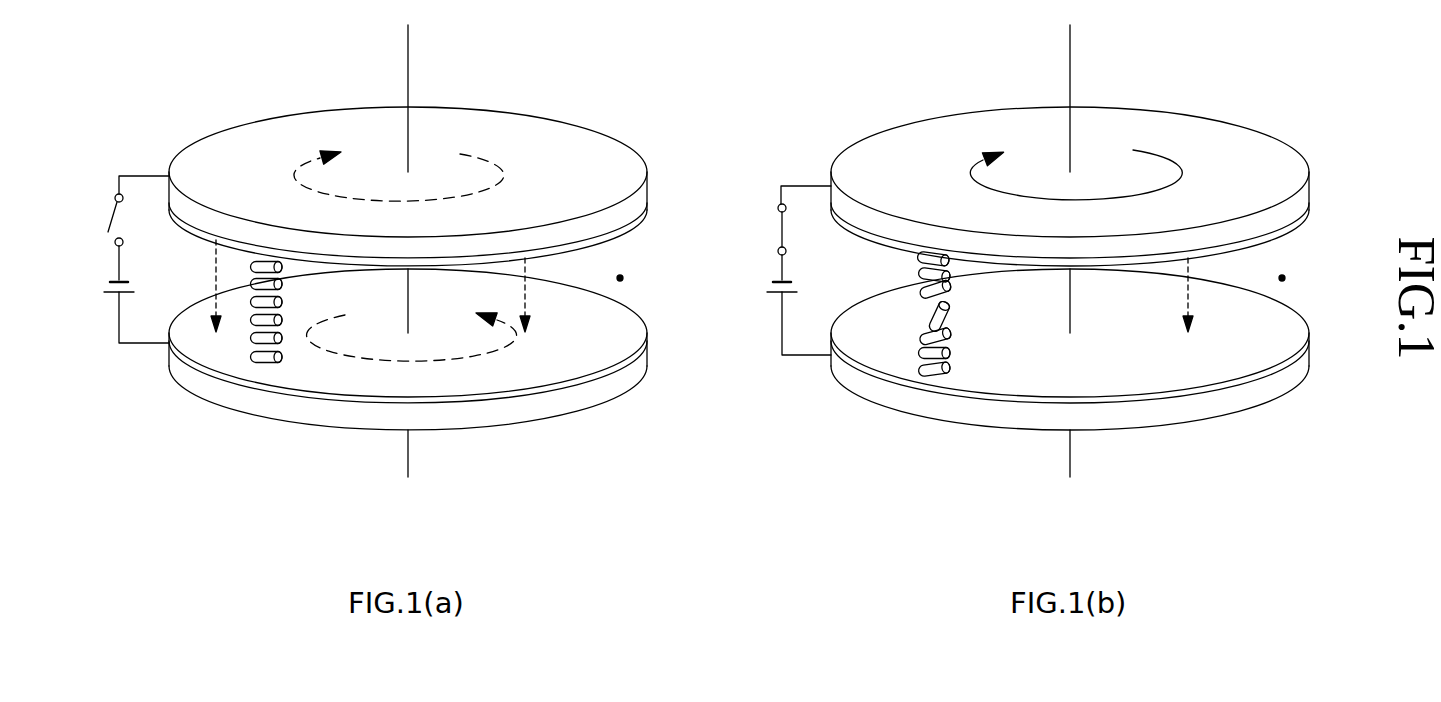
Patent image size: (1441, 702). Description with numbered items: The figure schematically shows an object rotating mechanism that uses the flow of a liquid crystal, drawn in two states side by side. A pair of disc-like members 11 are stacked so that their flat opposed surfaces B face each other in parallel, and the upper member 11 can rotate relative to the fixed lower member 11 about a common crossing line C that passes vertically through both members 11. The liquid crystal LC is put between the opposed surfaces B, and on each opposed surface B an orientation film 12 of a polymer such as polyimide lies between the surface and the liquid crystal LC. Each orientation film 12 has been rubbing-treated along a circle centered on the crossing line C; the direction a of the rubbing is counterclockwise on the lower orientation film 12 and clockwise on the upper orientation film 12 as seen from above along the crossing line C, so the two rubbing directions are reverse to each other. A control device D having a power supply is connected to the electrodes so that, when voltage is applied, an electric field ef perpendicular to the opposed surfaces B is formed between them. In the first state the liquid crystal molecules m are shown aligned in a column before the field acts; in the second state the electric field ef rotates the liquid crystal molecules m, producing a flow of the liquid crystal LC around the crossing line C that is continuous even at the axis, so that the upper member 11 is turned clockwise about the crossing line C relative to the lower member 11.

In FIG. 1A, the member 11 is at (625, 156).
In FIG. 1B, the member 11 is at (1287, 156).
In FIG. 1A, the orientation film 12 is at (613, 237).
In FIG. 1B, the orientation film 12 is at (1275, 237).
In FIG. 1A, the liquid crystal LC is at (620, 278).
In FIG. 1B, the liquid crystal LC is at (1282, 278).
In FIG. 1A, the crossing line C is at (408, 62).
In FIG. 1B, the crossing line C is at (1070, 62).
In FIG. 1A, the opposed surface B is at (553, 247).
In FIG. 1B, the opposed surface B is at (1215, 247).
In FIG. 1A, the direction of the rubbing treatment a is at (497, 152).
In FIG. 1B, the direction of the rubbing treatment a is at (1076, 175).
In FIG. 1A, the liquid crystal molecule m is at (273, 362).
In FIG. 1B, the liquid crystal molecule m is at (938, 374).
In FIG. 1A, the electric field ef is at (373, 286).
In FIG. 1B, the electric field ef is at (1197, 295).
In FIG. 1A, the control device D is at (138, 386).
In FIG. 1B, the control device D is at (800, 388).